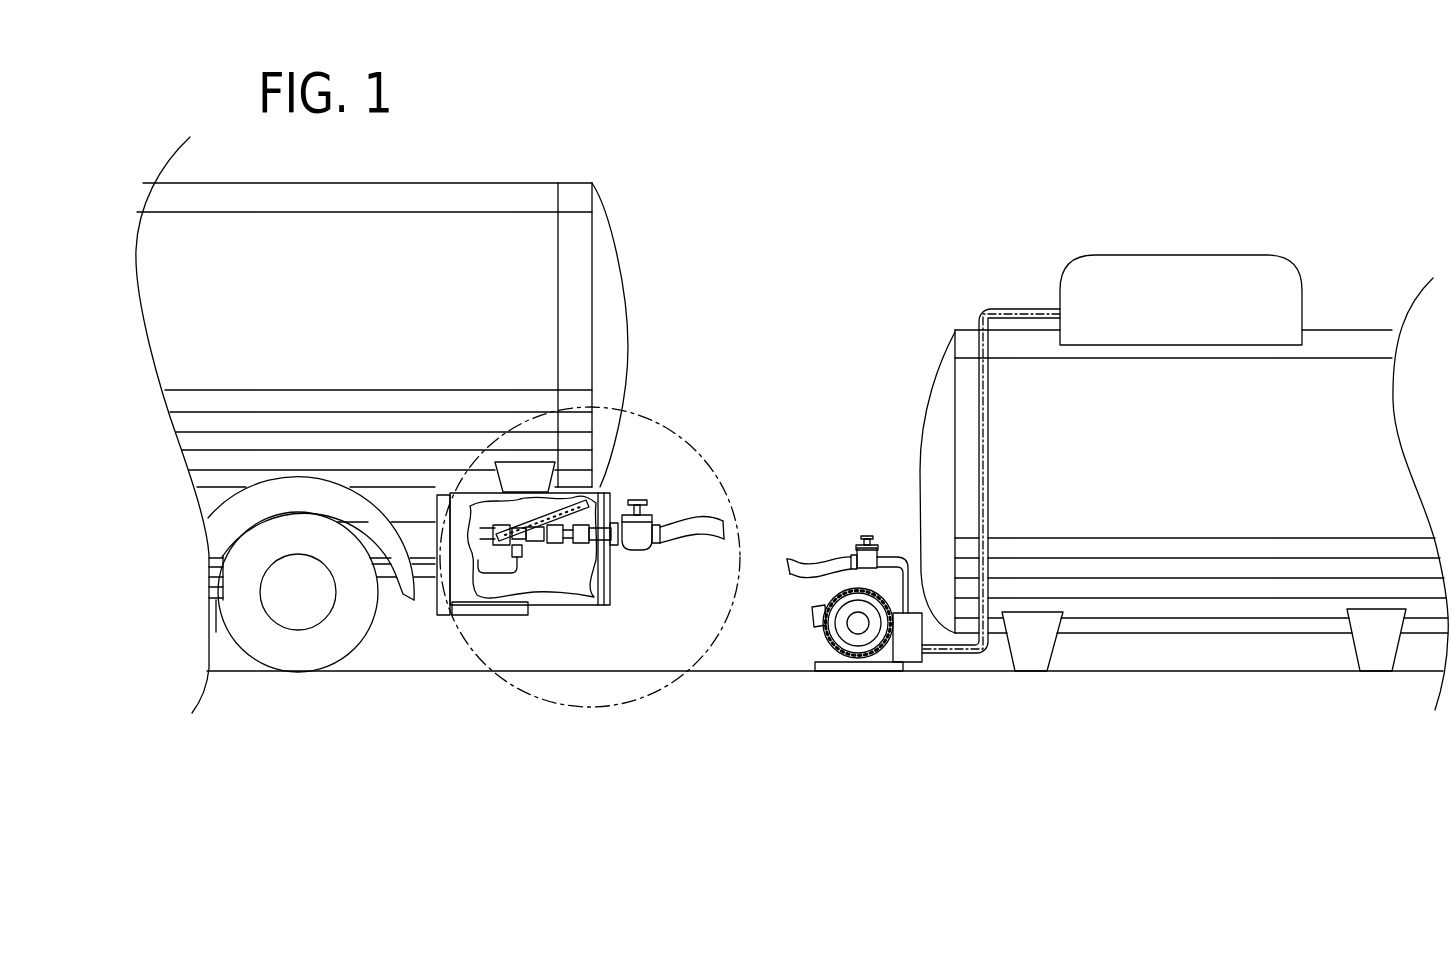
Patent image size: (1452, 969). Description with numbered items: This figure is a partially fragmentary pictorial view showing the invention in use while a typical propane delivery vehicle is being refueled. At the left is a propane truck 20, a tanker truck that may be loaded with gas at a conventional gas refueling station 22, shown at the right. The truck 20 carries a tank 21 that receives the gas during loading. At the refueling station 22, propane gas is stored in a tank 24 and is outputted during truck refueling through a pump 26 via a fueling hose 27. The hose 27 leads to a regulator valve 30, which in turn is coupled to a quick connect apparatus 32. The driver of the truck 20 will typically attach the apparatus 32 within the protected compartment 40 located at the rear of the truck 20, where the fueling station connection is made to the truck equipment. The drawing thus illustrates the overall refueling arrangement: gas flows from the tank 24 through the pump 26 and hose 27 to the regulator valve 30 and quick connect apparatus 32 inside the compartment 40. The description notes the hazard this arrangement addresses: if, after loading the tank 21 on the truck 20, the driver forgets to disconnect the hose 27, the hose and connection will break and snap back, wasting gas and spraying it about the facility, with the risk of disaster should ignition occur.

The propane truck 20 is at (644, 249).
The tank 21 is at (429, 319).
The gas refueling station 22 is at (902, 379).
The tank 24 is at (1214, 452).
The pump 26 is at (858, 632).
The hose 27 is at (816, 552).
The regulator valve 30 is at (640, 548).
The quick connect apparatus 32 is at (572, 570).
The protected compartment 40 is at (489, 628).